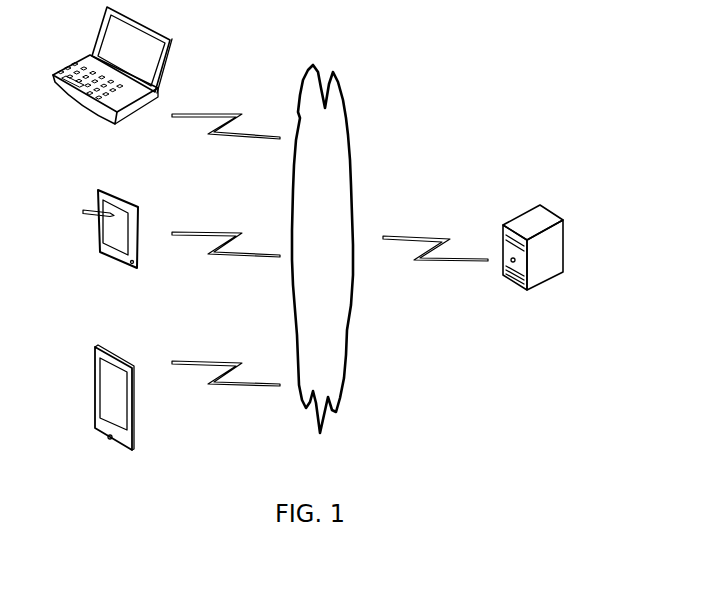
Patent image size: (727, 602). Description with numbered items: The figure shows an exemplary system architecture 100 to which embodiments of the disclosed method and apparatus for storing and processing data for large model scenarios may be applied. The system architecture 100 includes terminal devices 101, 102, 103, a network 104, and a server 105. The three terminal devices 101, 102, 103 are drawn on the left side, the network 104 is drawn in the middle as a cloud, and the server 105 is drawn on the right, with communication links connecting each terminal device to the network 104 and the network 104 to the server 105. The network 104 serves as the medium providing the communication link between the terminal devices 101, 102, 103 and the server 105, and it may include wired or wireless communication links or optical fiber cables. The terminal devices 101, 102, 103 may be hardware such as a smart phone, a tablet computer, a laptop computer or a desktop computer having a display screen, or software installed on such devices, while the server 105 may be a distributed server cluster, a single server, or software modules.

The system architecture 100 is at (556, 50).
The terminal device 101 is at (114, 416).
The terminal device 102 is at (110, 244).
The terminal device 103 is at (112, 80).
The network 104 is at (322, 249).
The server 105 is at (533, 268).